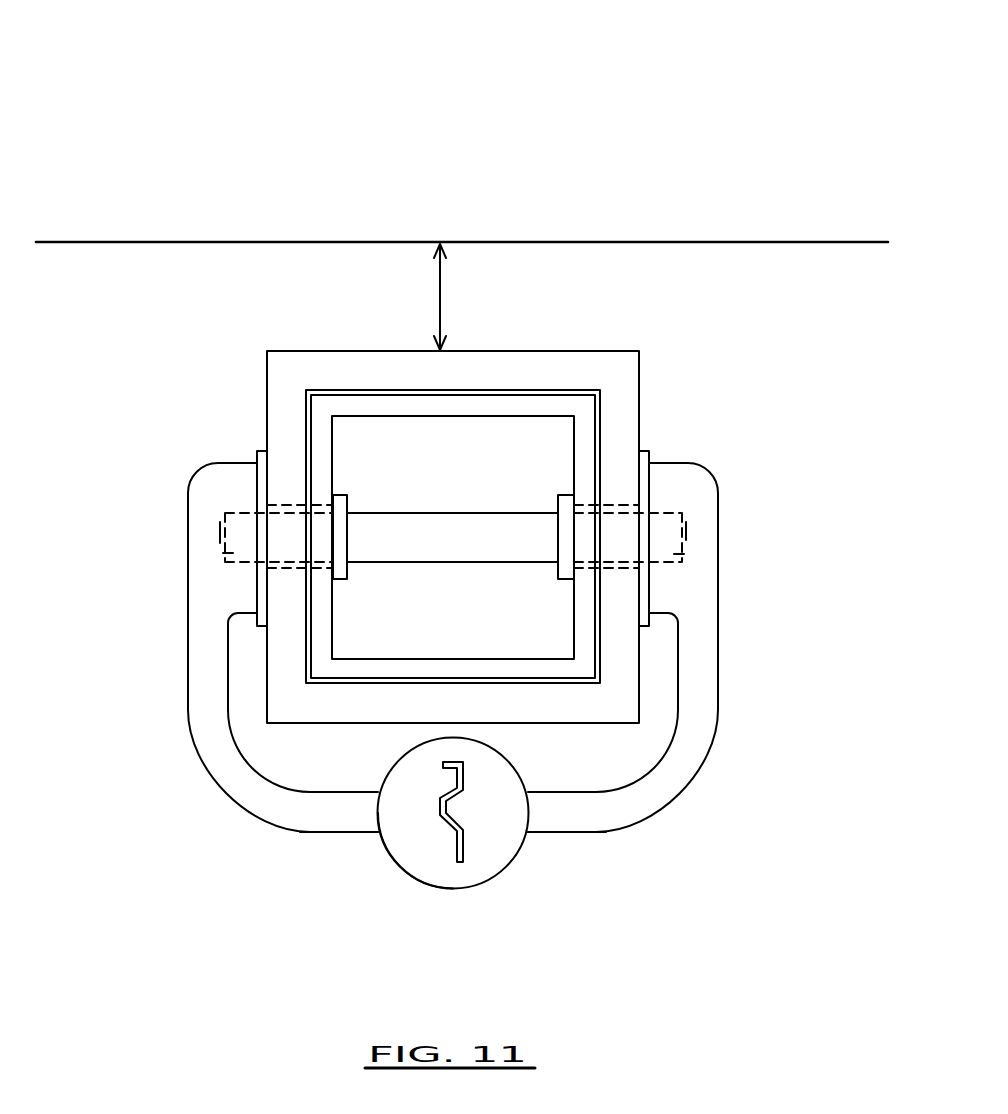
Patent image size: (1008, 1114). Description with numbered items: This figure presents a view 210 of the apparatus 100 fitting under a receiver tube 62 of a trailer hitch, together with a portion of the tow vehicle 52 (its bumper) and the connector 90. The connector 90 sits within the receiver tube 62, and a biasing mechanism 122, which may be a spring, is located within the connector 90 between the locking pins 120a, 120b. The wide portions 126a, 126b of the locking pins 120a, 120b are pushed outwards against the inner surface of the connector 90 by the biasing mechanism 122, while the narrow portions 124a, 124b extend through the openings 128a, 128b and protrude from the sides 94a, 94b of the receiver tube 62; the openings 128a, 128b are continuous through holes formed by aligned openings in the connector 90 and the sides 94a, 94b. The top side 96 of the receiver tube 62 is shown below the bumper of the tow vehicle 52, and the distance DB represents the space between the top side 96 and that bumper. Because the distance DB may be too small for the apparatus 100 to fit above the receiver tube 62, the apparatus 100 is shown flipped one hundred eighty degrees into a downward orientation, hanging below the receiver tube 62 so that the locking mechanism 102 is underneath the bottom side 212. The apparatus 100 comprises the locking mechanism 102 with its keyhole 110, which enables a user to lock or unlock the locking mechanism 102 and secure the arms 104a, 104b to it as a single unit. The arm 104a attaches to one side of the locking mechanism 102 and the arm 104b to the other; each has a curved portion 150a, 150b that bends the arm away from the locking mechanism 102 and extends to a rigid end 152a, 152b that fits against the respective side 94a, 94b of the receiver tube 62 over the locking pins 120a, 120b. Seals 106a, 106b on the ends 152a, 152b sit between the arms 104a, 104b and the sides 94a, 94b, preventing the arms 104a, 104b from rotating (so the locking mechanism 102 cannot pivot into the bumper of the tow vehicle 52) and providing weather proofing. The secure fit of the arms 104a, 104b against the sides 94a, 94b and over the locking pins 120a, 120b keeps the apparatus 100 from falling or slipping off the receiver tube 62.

The view 210 is at (403, 48).
The tow vehicle 52 is at (172, 240).
The distance DB is at (459, 297).
The receiver tube 62 is at (268, 349).
The top side 96 is at (385, 349).
The side 94a is at (641, 370).
The side 94b is at (267, 392).
The bottom side 212 is at (355, 725).
The connector 90 is at (482, 418).
The seal 106a is at (260, 450).
The seal 106b is at (642, 447).
The wide portion 126a is at (560, 497).
The wide portion 126b is at (345, 497).
The biasing mechanism 122 is at (457, 560).
The opening 128a is at (587, 573).
The opening 128b is at (320, 573).
The locking pin 120a is at (686, 530).
The locking pin 120b is at (218, 533).
The narrow portion 124a is at (680, 557).
The narrow portion 124b is at (220, 553).
The end portion 152a is at (205, 483).
The end portion 152b is at (700, 482).
The curved portion 150a is at (220, 777).
The curved portion 150b is at (687, 773).
The arm 104a is at (268, 826).
The arm 104b is at (633, 828).
The apparatus 100 is at (497, 873).
The locking mechanism 102 is at (417, 866).
The keyhole 110 is at (462, 867).